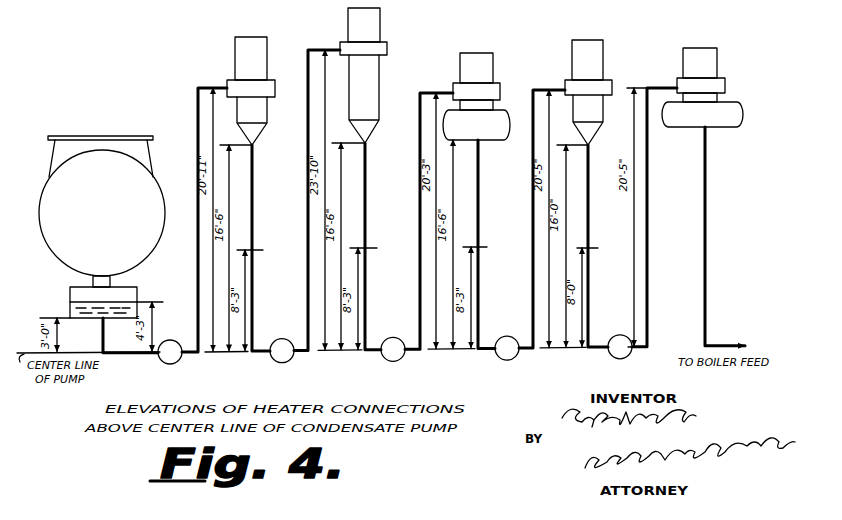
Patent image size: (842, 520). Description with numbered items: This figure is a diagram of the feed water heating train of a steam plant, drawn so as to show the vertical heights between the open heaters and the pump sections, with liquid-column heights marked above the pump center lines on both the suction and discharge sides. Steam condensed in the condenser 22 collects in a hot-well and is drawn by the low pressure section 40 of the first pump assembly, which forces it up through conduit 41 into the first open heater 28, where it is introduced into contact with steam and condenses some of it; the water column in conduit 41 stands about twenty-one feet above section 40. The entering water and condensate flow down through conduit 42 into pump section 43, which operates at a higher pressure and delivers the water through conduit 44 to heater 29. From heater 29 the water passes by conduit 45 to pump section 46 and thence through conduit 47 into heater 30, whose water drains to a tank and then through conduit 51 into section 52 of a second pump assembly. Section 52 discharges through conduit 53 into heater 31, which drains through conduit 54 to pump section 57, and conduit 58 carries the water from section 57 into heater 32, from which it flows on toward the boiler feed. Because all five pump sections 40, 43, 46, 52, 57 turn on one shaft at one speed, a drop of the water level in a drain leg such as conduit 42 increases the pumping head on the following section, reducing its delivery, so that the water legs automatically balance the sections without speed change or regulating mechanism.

The condenser 22 is at (143, 247).
The open heater 28 is at (243, 48).
The open heater 29 is at (372, 75).
The open heater 30 is at (490, 63).
The open heater 31 is at (602, 58).
The open heater 32 is at (715, 62).
The low pressure section 40 is at (175, 364).
The conduit 41 is at (198, 108).
The conduit 42 is at (254, 203).
The pump section 43 is at (290, 363).
The conduit 44 is at (306, 143).
The conduit 45 is at (368, 205).
The pump section 46 is at (402, 361).
The conduit 47 is at (419, 140).
The conduit 51 is at (480, 215).
The section 52 is at (516, 360).
The conduit 53 is at (534, 137).
The conduit 54 is at (592, 218).
The section 57 is at (628, 358).
The conduit 58 is at (648, 190).